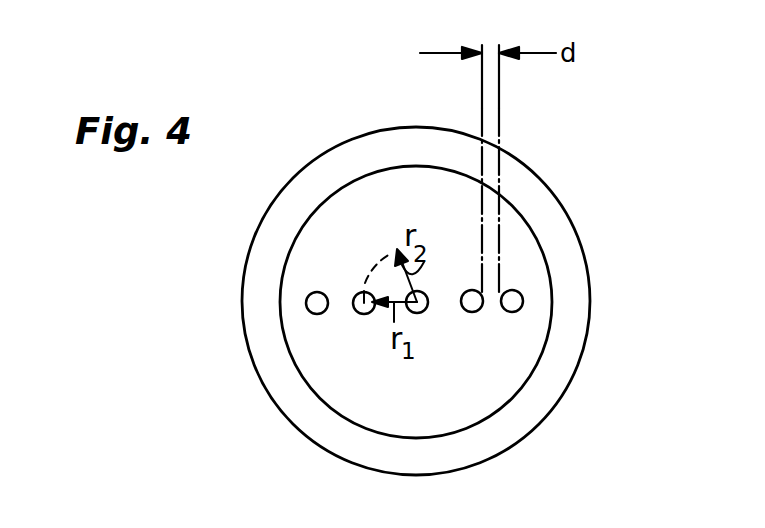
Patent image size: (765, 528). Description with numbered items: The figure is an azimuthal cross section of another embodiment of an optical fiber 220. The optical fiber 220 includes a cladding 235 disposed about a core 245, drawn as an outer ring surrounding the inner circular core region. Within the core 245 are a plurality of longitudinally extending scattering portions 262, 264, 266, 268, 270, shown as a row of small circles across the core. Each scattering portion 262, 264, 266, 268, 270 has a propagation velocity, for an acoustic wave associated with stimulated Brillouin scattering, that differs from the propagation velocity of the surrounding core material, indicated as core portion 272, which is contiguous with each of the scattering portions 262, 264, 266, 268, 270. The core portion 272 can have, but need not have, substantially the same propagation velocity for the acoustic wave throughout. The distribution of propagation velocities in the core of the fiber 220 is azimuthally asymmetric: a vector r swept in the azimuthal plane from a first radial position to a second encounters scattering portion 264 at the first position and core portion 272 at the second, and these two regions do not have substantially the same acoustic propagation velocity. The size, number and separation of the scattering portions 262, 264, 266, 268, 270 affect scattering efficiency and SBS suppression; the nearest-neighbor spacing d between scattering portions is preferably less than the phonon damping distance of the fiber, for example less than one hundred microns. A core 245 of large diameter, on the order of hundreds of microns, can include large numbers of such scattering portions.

The optical fiber 220 is at (215, 313).
The cladding 235 is at (507, 433).
The core 245 is at (440, 419).
The scattering portion 262 is at (323, 291).
The scattering portion 264 is at (355, 312).
The scattering portion 266 is at (425, 292).
The scattering portion 268 is at (469, 312).
The scattering portion 270 is at (512, 312).
The core portion 272 is at (384, 203).